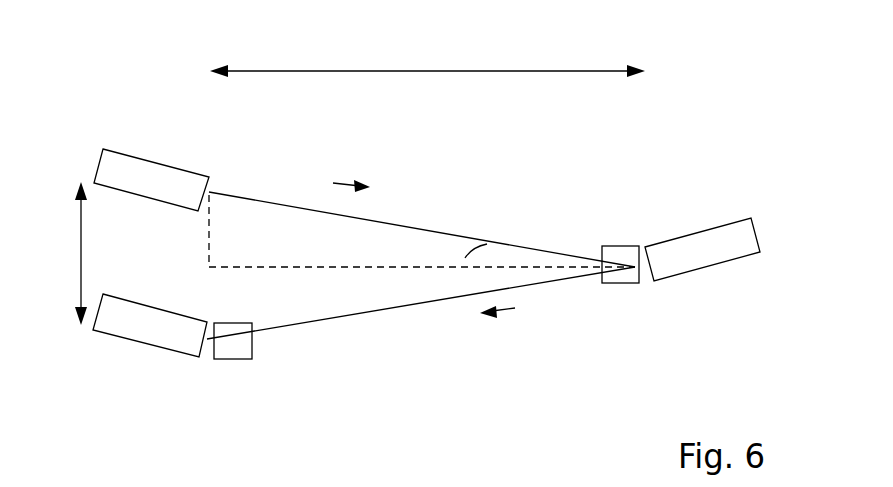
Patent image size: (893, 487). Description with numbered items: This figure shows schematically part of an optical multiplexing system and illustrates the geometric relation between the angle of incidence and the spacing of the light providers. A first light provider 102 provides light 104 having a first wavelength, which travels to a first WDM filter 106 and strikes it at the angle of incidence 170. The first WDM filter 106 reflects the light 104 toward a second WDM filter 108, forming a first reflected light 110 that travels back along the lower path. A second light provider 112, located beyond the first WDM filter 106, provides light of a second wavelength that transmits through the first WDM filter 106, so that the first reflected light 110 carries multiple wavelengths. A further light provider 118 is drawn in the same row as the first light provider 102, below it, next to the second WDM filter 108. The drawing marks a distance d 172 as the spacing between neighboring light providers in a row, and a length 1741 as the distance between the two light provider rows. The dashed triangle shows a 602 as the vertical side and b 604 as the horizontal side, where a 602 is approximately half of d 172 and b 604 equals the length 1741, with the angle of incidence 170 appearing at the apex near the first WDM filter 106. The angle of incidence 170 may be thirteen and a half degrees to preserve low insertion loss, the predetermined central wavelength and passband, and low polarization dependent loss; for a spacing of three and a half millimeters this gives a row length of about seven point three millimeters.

The length L1 1741 is at (425, 71).
The first light provider 102 is at (150, 159).
The light 104 is at (388, 222).
The first WDM filter 106 is at (618, 248).
The second WDM filter 108 is at (228, 322).
The first reflected light 110 is at (387, 312).
The second light provider 112 is at (695, 232).
The second light source / detector 118 is at (118, 298).
The angle of incidence 170 is at (462, 267).
The distance d 172 is at (81, 268).
The a 602 is at (210, 252).
The b 604 is at (242, 267).